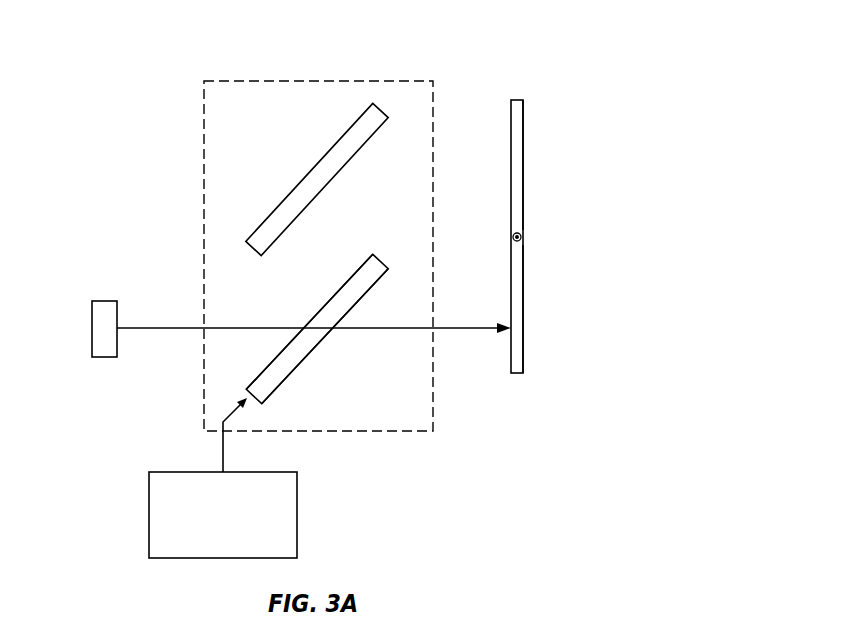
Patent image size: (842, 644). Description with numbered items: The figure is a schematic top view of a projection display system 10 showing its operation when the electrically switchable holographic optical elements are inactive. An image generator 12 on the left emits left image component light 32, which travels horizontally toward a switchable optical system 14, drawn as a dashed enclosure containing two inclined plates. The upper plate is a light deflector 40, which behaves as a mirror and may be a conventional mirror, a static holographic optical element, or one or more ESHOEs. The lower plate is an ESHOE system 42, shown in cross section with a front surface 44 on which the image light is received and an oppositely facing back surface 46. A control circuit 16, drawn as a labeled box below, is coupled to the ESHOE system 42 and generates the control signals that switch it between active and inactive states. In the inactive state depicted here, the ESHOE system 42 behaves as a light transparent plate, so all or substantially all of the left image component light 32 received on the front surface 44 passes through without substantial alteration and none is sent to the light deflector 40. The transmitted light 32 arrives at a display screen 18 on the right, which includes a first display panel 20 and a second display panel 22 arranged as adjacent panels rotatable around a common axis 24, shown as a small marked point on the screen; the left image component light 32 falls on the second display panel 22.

The projection display system 10 is at (632, 49).
The image generator 12 is at (105, 300).
The switchable optical system 14 is at (346, 80).
The control circuit 16 is at (197, 470).
The display screen 18 is at (520, 92).
The first display panel 20 is at (524, 170).
The second display panel 22 is at (524, 298).
The common axis 24 is at (531, 234).
The left image component light 32 is at (143, 330).
The light deflector 40 is at (323, 155).
The ESHOE system 42 is at (347, 280).
The front surface 44 is at (322, 308).
The back surface 46 is at (307, 353).